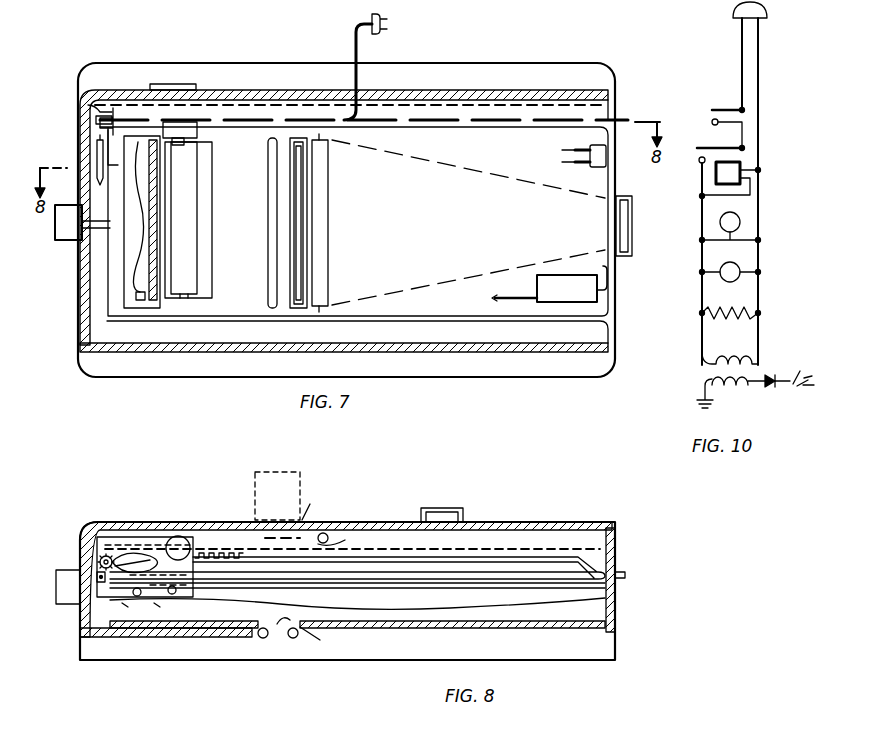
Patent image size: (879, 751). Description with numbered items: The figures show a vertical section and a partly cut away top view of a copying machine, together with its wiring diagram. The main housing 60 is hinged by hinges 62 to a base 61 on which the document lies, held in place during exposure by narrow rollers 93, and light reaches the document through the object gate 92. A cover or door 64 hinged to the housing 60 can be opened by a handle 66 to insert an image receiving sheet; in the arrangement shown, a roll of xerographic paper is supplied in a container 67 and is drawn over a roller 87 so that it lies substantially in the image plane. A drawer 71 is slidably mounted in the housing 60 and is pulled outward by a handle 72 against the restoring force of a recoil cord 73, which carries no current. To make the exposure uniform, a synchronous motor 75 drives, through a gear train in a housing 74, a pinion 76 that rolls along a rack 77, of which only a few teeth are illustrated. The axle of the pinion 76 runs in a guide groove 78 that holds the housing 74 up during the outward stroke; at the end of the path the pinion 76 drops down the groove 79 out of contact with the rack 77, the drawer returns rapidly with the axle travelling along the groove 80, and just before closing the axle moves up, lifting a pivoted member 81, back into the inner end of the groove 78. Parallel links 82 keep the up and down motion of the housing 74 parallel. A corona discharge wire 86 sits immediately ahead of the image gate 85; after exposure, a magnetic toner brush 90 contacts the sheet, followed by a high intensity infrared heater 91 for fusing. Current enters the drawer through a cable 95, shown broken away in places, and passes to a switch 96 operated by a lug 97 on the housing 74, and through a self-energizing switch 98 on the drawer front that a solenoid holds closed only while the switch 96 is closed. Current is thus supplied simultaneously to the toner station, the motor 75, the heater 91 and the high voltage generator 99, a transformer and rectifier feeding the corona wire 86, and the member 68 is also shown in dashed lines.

In FIG. 7, the main housing 60 is at (246, 89).
In FIG. 7, the base 61 is at (211, 72).
In FIG. 8, the base 61 is at (432, 650).
In FIG. 7, the hinges 62 is at (170, 84).
In FIG. 8, the cover or door 64 is at (522, 522).
In FIG. 8, the handle 66 is at (460, 510).
In FIG. 8, the container 67 is at (277, 472).
In FIG. 8, the lever 68 is at (310, 504).
In FIG. 7, the drawer 71 is at (499, 126).
In FIG. 7, the handle 72 is at (633, 220).
In FIG. 7, the recoil cord 73 is at (92, 233).
In FIG. 7, the gear train housing 74 is at (132, 120).
In FIG. 8, the gear train housing 74 is at (110, 537).
In FIG. 7, the synchronous motor 75 is at (182, 128).
In FIG. 10, the synchronous motor 75 is at (740, 265).
In FIG. 8, the synchronous motor 75 is at (180, 536).
In FIG. 7, the pinion 76 is at (104, 110).
In FIG. 8, the pinion 76 is at (100, 559).
In FIG. 8, the rack 77 is at (221, 550).
In FIG. 8, the guide groove 78 is at (398, 558).
In FIG. 8, the groove 79 is at (594, 563).
In FIG. 8, the groove 80 is at (497, 573).
In FIG. 8, the pivoted member 81 is at (137, 565).
In FIG. 8, the parallel links 82 is at (157, 600).
In FIG. 7, the image gate 85 is at (272, 182).
In FIG. 8, the image gate 85 is at (280, 537).
In FIG. 7, the corona discharge wire 86 is at (300, 190).
In FIG. 10, the corona discharge wire 86 is at (798, 394).
In FIG. 8, the corona discharge wire 86 is at (313, 531).
In FIG. 7, the roller 87 is at (322, 223).
In FIG. 8, the roller 87 is at (330, 538).
In FIG. 7, the magnetic toner brush 90 is at (182, 208).
In FIG. 10, the magnetic toner brush 90 is at (745, 215).
In FIG. 7, the high intensity infrared heater 91 is at (130, 275).
In FIG. 10, the high intensity infrared heater 91 is at (738, 310).
In FIG. 8, the object gate 92 is at (308, 637).
In FIG. 8, the narrow rollers 93 is at (293, 640).
In FIG. 7, the cable 95 is at (358, 40).
In FIG. 10, the cable 95 is at (765, 52).
In FIG. 7, the switch 96 is at (97, 141).
In FIG. 10, the switch 96 is at (722, 107).
In FIG. 7, the lug 97 is at (100, 121).
In FIG. 8, the lug 97 is at (100, 581).
In FIG. 7, the self-energizing switch 98 is at (607, 155).
In FIG. 10, the self-energizing switch 98 is at (712, 146).
In FIG. 7, the high voltage generator 99 is at (586, 299).
In FIG. 10, the high voltage generator 99 is at (742, 358).